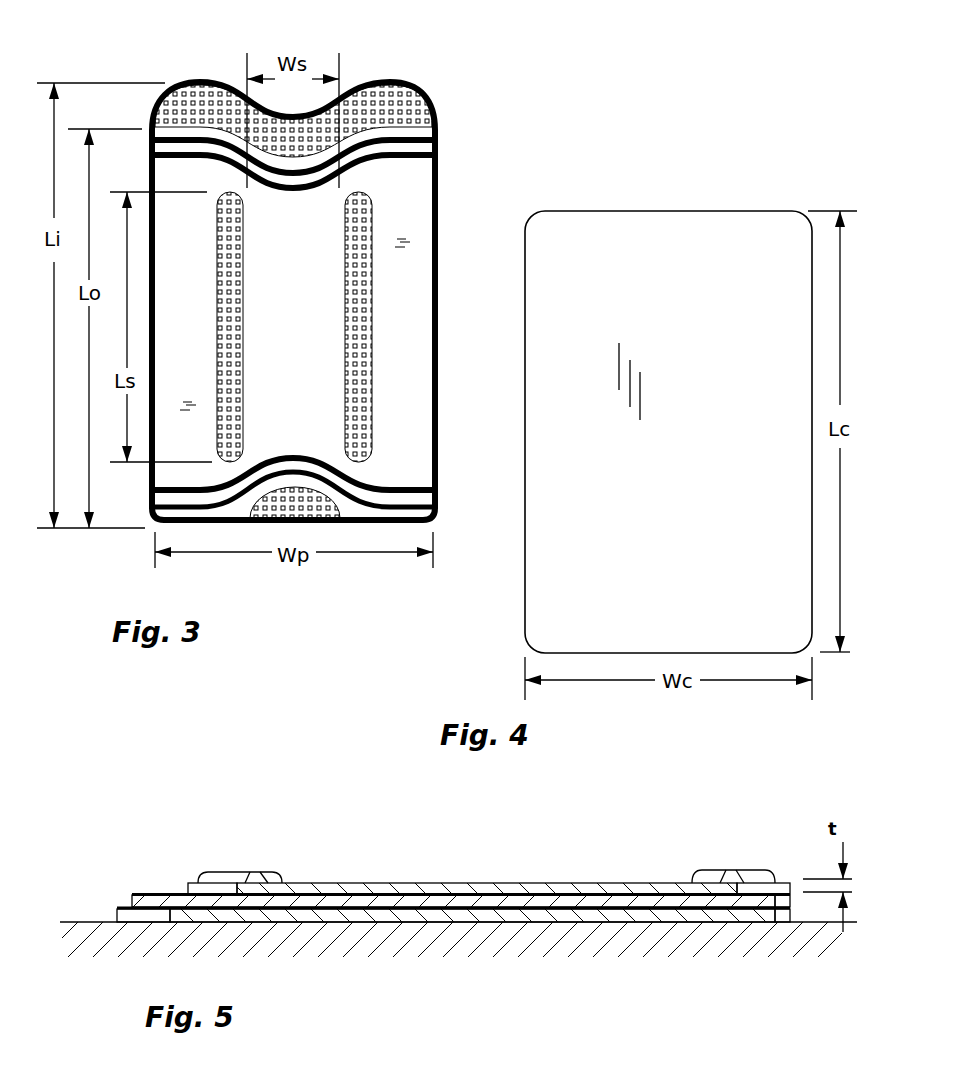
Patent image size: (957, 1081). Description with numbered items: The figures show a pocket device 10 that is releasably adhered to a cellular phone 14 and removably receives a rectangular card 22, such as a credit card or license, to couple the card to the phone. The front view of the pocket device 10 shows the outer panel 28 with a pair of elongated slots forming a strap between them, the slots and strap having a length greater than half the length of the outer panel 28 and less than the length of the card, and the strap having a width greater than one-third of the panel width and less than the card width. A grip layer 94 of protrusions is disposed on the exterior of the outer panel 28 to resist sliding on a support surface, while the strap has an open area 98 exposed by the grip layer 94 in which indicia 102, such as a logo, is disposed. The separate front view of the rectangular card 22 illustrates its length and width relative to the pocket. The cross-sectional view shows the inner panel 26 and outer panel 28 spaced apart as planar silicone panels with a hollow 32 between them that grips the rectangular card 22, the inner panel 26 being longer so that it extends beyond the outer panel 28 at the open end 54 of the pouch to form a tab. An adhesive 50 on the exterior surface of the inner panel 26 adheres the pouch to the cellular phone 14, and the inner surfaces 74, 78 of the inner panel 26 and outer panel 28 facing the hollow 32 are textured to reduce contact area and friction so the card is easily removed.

In FIG. 3, the pocket device 10 is at (458, 110).
In FIG. 5, the pocket device 10 is at (475, 898).
In FIG. 5, the cellular phone 14 is at (757, 930).
In FIG. 4, the rectangular card 22 is at (737, 230).
In FIG. 5, the rectangular card 22 is at (408, 900).
In FIG. 5, the inner panel 26 is at (547, 913).
In FIG. 5, the outer panel 28 is at (498, 885).
In FIG. 5, the hollow 32 is at (645, 890).
In FIG. 5, the adhesive 50 is at (217, 922).
In FIG. 5, the open end 54 is at (197, 888).
In FIG. 5, the inner surface of the inner panel 74 is at (347, 910).
In FIG. 5, the inner surface of the outer panel 78 is at (333, 893).
In FIG. 5, the grip layer 94 is at (235, 871).
In FIG. 3, the open area 98 is at (327, 345).
In FIG. 3, the indicia 102 is at (310, 307).